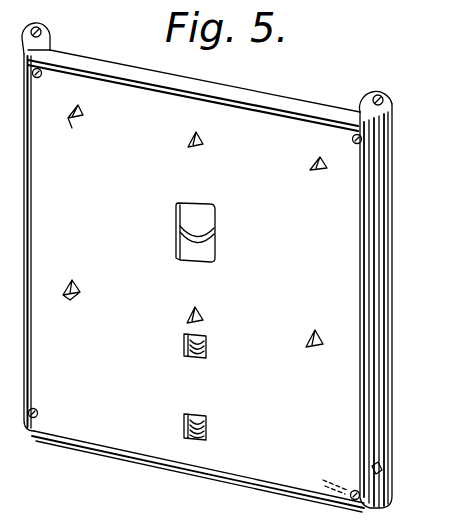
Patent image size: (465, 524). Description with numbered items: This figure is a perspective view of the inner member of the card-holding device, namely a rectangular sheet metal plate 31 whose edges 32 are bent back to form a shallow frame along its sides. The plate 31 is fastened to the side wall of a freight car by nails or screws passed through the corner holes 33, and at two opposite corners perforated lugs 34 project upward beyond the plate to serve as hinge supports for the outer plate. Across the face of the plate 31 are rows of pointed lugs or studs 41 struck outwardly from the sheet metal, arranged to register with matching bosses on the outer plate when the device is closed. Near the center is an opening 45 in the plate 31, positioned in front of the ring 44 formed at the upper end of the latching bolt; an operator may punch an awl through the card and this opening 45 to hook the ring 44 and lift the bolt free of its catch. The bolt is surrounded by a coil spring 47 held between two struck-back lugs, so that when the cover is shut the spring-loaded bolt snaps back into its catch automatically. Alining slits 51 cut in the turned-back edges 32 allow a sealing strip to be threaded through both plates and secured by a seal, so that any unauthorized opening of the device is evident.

The sheet metal plate 31 is at (279, 269).
The edges 32 is at (380, 248).
The corner holes 33 is at (362, 139).
The lugs 34 is at (386, 84).
The pointed lugs or studs 41 is at (68, 127).
The ring 44 is at (210, 233).
The opening 45 is at (190, 213).
The coil spring 47 is at (207, 347).
The alining slits 51 is at (380, 469).